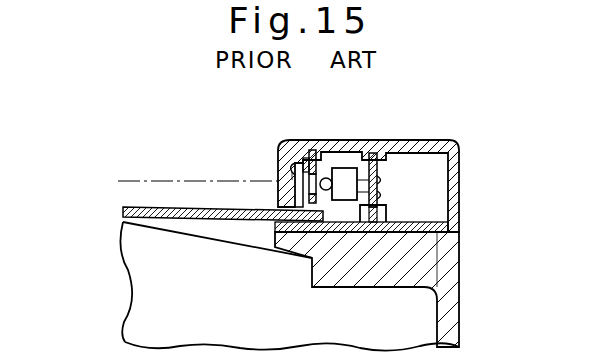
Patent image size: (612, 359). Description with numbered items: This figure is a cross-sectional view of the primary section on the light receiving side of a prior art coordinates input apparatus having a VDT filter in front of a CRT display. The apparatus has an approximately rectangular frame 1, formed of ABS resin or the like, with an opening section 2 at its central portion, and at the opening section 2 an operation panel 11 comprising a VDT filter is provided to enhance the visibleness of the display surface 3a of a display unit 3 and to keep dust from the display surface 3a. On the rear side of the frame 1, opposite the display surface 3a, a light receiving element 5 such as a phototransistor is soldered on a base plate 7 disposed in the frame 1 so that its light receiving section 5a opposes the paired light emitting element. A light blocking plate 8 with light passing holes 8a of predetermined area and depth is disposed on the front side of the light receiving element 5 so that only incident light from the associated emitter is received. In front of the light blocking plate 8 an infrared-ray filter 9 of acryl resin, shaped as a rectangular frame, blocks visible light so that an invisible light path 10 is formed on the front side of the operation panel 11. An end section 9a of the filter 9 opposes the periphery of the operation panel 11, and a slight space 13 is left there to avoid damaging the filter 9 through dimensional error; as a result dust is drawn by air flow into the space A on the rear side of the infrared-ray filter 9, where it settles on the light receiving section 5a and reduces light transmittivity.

The frame 1 is at (460, 160).
The opening section 2 is at (198, 165).
The display unit 3 is at (448, 278).
The display surface 3a is at (123, 222).
The light receiving element 5 is at (372, 156).
The light receiving section 5a is at (343, 180).
The base plate 7 is at (384, 168).
The light blocking plate 8 is at (313, 147).
The light passing hole 8a is at (317, 172).
The infrared-ray filter 9 is at (279, 176).
The end section 9a is at (293, 227).
The light path 10 is at (151, 178).
The operation panel 11 is at (122, 207).
The space 13 is at (275, 208).
The space A is at (296, 166).